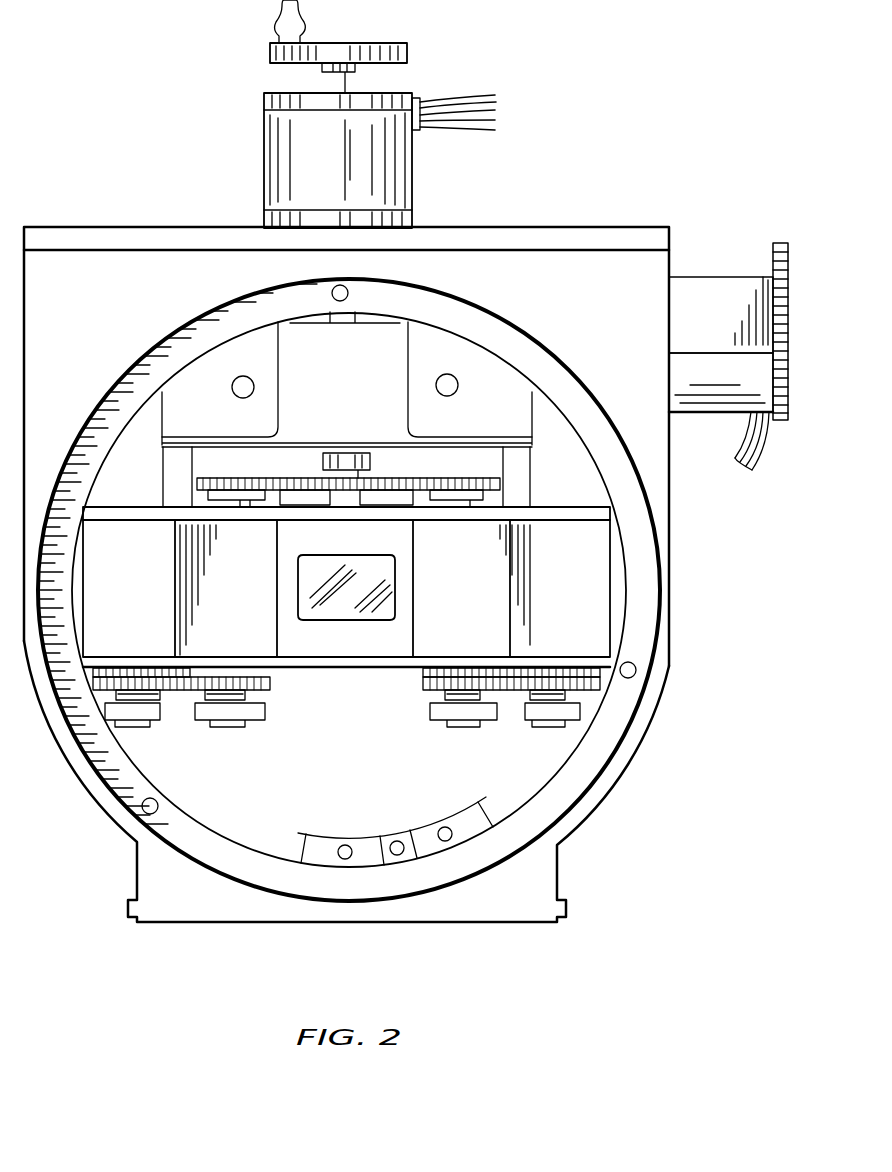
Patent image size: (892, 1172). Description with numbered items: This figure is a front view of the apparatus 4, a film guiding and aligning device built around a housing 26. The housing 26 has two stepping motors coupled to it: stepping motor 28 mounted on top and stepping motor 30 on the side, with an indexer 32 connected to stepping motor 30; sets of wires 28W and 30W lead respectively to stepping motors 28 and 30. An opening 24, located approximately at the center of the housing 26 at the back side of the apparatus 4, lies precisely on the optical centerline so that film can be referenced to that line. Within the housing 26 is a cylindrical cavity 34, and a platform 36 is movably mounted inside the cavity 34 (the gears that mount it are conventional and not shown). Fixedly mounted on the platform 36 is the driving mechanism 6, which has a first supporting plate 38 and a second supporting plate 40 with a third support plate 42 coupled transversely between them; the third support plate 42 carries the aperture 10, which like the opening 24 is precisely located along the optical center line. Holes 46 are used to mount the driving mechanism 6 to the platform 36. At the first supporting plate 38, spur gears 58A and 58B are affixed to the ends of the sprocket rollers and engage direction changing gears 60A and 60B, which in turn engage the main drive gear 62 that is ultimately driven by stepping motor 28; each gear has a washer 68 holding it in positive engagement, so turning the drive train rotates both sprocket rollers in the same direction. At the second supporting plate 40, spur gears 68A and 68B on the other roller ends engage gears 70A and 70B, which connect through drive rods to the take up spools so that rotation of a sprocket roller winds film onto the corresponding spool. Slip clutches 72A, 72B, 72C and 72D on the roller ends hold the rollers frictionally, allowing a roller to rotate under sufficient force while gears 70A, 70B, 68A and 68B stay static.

The apparatus 4 is at (628, 862).
The driving mechanism 6 is at (562, 562).
The aperture 10 is at (362, 620).
The opening 24 is at (336, 554).
The housing 26 is at (590, 228).
The stepping motor 28 is at (280, 158).
The set of wires 28W is at (452, 132).
The stepping motor 30 is at (700, 414).
The set of wires 30W is at (764, 454).
The indexer 32 is at (720, 290).
The cylindrical cavity 34 is at (226, 840).
The platform 36 is at (362, 810).
The first supporting plate 38 is at (124, 508).
The second supporting plate 40 is at (638, 650).
The third support plate 42 is at (322, 648).
The holes 46 is at (232, 382).
The spur gear 58A is at (218, 480).
The spur gear 58B is at (474, 482).
The direction changing gear 60A is at (287, 488).
The direction changing gear 60B is at (404, 486).
The main drive gear 62 is at (368, 478).
The washer 68 is at (488, 492).
The spur gear 68A is at (234, 677).
The spur gear 68B is at (460, 678).
The gear 70A is at (138, 668).
The gear 70B is at (558, 666).
The slip clutch 72A is at (160, 720).
The slip clutch 72B is at (250, 720).
The slip clutch 72C is at (440, 718).
The slip clutch 72D is at (522, 718).